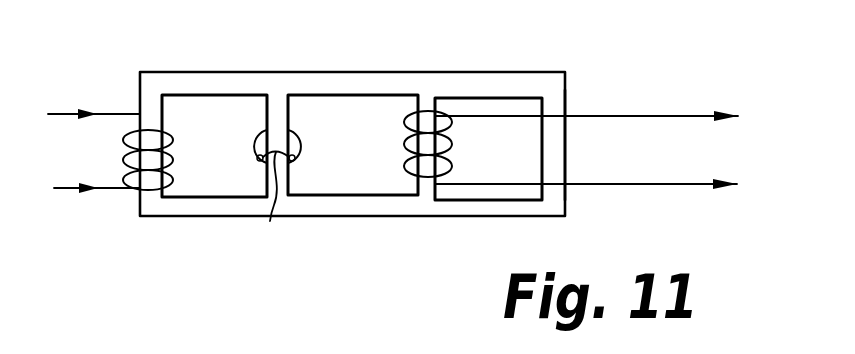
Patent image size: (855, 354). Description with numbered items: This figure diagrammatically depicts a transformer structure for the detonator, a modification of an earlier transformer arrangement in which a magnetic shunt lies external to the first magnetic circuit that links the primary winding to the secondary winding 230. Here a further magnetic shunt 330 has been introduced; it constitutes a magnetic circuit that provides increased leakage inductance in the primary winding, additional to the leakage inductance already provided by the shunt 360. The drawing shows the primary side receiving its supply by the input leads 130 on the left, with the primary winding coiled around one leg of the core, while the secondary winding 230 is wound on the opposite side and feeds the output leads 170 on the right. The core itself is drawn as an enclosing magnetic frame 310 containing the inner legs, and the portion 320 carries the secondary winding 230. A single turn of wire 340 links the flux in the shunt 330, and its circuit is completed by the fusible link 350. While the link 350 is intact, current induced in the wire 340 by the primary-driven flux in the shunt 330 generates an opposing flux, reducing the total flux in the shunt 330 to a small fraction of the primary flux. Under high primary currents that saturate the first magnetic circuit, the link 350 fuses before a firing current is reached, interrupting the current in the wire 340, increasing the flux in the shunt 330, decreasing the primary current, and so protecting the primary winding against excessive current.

The input signal lines 130 is at (103, 113).
The output signal lines 170 is at (713, 120).
The secondary winding 230 is at (452, 138).
The housing enclosure 310 is at (368, 82).
The output stage 320 is at (426, 101).
The magnetic shunt 330 is at (280, 88).
The single turn of wire 340 is at (317, 162).
The fusible link 350 is at (269, 204).
The magnetic shunt 360 is at (570, 148).